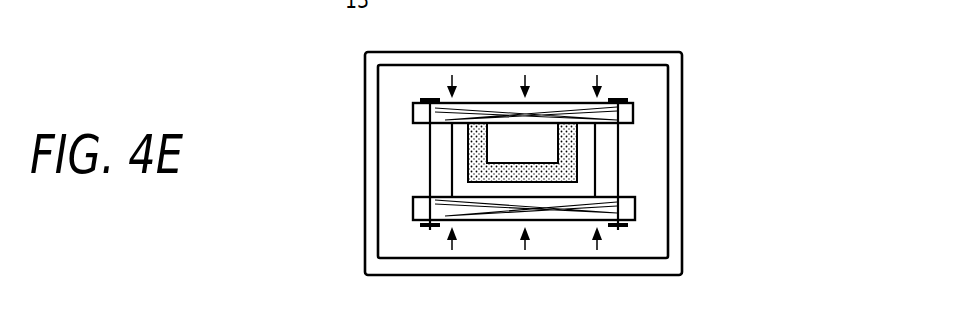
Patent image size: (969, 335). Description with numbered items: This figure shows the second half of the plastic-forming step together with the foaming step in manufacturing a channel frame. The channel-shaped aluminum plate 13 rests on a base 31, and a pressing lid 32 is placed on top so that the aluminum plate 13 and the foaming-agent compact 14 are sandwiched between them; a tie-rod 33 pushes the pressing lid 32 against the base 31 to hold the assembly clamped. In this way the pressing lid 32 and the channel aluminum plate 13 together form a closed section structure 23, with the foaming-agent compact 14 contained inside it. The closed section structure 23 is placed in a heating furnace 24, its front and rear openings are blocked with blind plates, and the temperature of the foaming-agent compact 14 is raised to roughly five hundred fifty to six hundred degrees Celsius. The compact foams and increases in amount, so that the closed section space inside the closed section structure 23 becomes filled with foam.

The aluminum plate 13 is at (552, 193).
The foaming-agent compact 14 is at (530, 163).
The closed section structure 23 is at (652, 148).
The heating furnace 24 is at (675, 193).
The base 31 is at (415, 213).
The pressing lid 32 is at (415, 117).
The tie-rod 33 is at (430, 179).